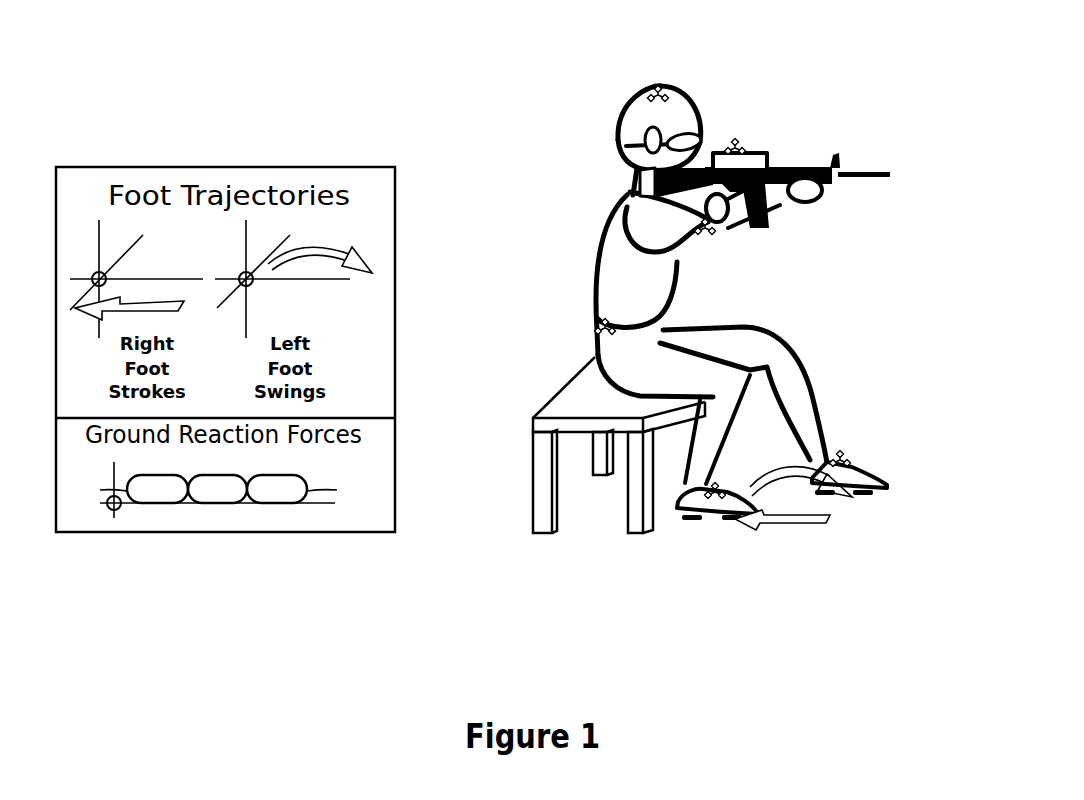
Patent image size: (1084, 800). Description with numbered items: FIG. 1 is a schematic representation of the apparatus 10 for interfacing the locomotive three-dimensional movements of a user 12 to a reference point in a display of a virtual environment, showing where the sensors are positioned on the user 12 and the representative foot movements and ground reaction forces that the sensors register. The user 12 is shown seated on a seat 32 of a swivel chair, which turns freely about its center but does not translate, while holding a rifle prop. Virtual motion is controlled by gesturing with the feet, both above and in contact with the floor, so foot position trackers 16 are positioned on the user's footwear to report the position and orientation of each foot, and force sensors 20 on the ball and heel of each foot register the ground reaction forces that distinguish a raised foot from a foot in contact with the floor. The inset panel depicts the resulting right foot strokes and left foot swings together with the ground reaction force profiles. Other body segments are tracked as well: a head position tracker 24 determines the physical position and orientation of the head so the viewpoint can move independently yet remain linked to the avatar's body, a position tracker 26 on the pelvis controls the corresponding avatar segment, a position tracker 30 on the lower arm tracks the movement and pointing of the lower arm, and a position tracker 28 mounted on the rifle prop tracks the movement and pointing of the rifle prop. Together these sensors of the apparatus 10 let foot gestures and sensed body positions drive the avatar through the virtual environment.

The apparatus 10 is at (535, 110).
The user 12 is at (589, 229).
The foot position trackers 16 is at (677, 513).
The force sensors 20 is at (692, 528).
The head position tracker 24 is at (681, 75).
The pelvis position tracker 26 is at (579, 310).
The rifle prop position tracker 28 is at (761, 131).
The lower arm position tracker 30 is at (731, 255).
The seat 32 is at (542, 382).